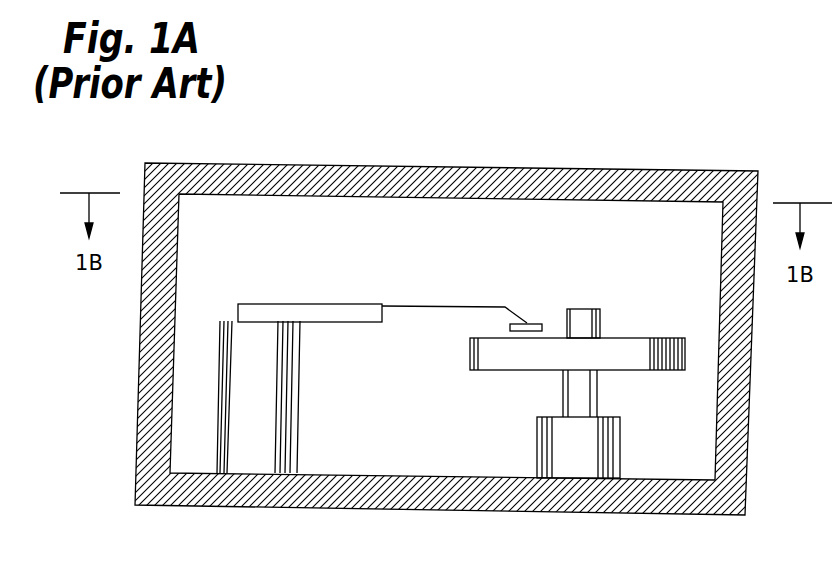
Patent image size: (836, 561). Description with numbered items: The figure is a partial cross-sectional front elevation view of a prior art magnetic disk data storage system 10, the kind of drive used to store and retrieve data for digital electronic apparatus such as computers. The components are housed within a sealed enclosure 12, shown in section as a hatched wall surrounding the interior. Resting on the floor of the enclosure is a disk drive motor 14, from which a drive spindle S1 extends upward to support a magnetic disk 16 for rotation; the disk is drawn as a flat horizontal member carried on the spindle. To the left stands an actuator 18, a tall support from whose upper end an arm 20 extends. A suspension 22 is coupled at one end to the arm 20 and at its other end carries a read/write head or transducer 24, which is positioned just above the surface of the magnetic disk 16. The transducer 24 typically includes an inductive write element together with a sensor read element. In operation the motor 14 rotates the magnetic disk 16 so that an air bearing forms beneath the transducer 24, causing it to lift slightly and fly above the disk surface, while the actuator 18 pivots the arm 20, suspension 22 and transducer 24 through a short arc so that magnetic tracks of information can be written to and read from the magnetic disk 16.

The magnetic disk data storage system 10 is at (711, 104).
The sealed enclosure 12 is at (442, 488).
The disk drive motor 14 is at (567, 438).
The magnetic disk 16 is at (488, 358).
The actuator 18 is at (250, 390).
The arm 20 is at (287, 310).
The suspension 22 is at (415, 306).
The read/write head or transducer 24 is at (533, 323).
The drive spindle S1 is at (582, 318).